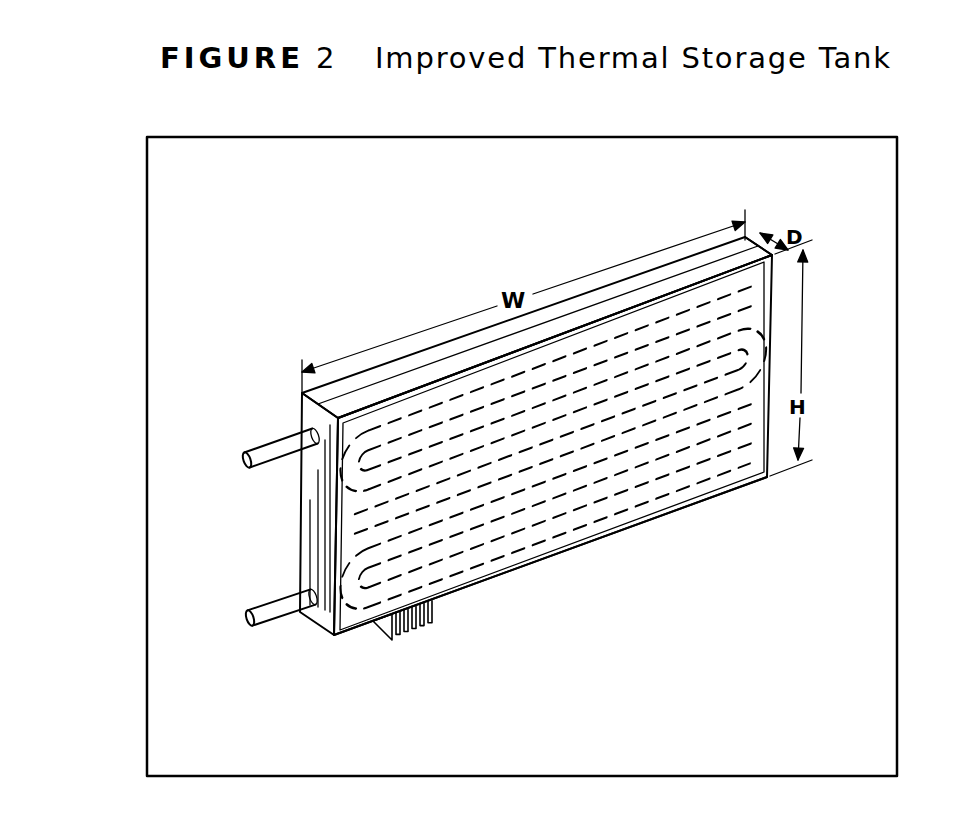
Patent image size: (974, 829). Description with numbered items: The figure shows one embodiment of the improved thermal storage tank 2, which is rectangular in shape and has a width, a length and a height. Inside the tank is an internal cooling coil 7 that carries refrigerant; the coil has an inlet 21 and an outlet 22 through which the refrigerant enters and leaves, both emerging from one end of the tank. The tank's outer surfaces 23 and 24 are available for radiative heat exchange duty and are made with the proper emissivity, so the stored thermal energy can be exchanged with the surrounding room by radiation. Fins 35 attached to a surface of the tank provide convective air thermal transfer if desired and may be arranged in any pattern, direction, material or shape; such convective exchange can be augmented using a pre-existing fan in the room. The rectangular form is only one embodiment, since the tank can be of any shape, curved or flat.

The tank 2 is at (485, 330).
The internal cooling coil 7 is at (740, 405).
The inlet 21 is at (252, 438).
The outlet 22 is at (270, 628).
The outer surface 23 is at (577, 528).
The outer surface 24 is at (745, 240).
The fins 35 is at (435, 614).